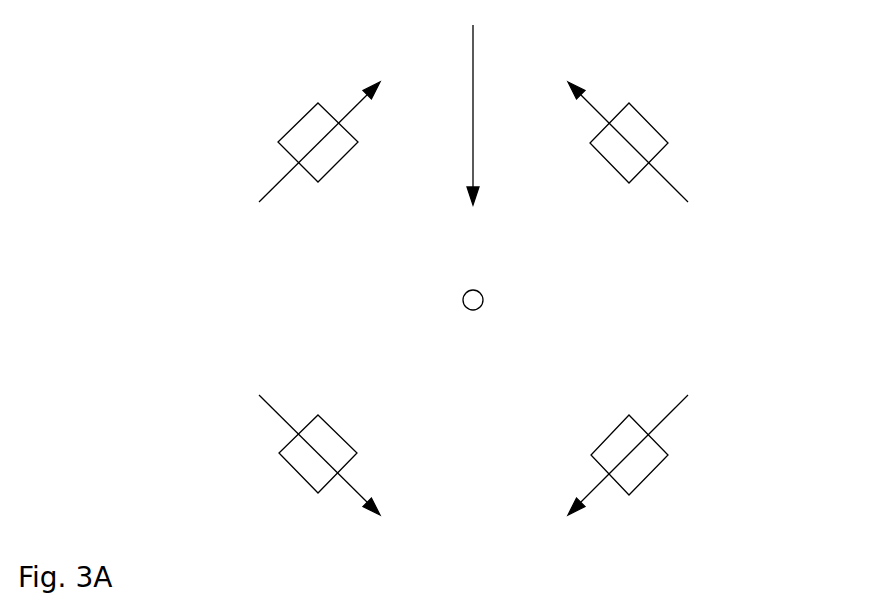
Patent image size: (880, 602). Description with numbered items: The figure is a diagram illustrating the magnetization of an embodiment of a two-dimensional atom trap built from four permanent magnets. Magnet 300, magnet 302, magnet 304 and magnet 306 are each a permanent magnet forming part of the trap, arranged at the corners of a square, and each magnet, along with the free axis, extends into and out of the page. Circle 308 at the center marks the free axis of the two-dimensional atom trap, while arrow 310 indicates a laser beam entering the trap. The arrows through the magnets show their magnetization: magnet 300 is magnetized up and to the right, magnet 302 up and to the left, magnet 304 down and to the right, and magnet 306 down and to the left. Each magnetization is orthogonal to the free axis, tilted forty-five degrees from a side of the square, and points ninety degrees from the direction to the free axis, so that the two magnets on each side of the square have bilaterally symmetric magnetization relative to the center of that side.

The magnet 300 is at (293, 122).
The magnet 302 is at (665, 127).
The magnet 304 is at (290, 478).
The magnet 306 is at (650, 482).
The circle 308 is at (493, 312).
The arrow 310 is at (485, 38).